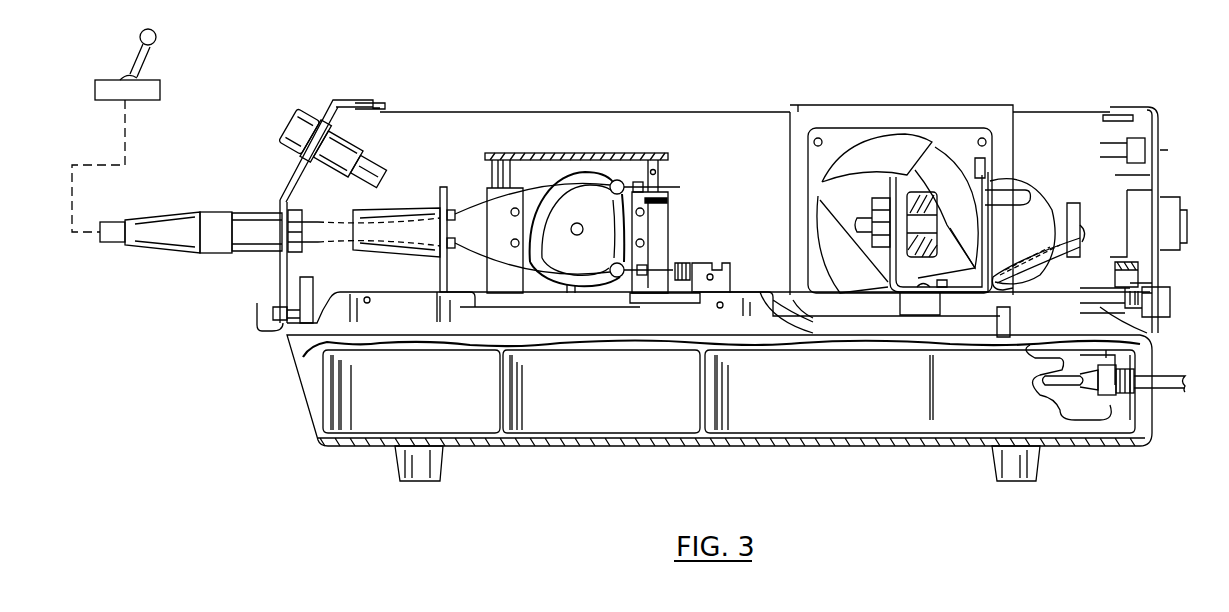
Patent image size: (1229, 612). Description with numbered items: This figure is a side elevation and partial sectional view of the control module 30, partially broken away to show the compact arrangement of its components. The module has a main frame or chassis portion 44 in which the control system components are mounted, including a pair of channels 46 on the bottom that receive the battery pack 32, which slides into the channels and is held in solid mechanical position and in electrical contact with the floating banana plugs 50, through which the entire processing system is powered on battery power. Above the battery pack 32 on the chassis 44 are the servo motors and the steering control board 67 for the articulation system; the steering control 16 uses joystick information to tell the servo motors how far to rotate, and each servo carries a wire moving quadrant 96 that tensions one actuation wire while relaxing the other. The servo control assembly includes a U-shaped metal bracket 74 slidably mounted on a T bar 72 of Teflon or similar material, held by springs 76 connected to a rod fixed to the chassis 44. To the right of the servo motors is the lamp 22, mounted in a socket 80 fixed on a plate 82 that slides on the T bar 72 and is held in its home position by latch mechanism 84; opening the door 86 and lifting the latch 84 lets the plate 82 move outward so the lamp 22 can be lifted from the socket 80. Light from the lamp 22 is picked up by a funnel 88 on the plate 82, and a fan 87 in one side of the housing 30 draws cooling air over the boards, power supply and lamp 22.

The control module 30 is at (722, 95).
The fan 87 is at (345, 140).
The steering control board 67 is at (495, 153).
The steering control 16 is at (540, 153).
The wire moving quadrant 96 is at (555, 232).
The U-shaped metal bracket 74 is at (660, 218).
The springs 76 is at (688, 265).
The T bar 72 is at (808, 307).
The chassis portion 44 is at (390, 300).
The battery pack 32 is at (577, 421).
The channels 46 is at (365, 447).
The floating banana plugs 50 is at (1118, 395).
The bracket or plate 82 is at (1152, 335).
The latch mechanism 84 is at (1135, 275).
The door 86 is at (1160, 182).
The funnel 88 is at (915, 190).
The lamp 22 is at (1037, 205).
The socket 80 is at (1083, 232).